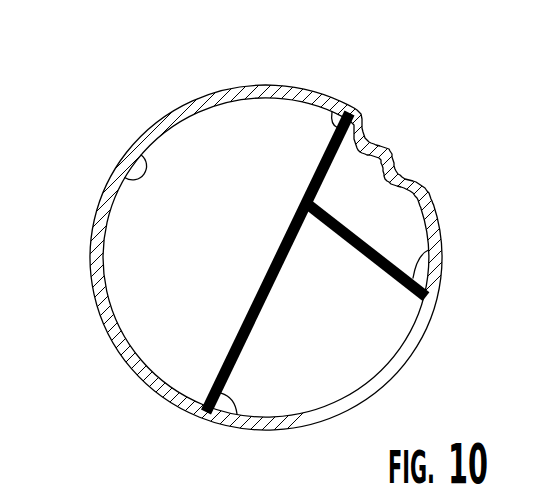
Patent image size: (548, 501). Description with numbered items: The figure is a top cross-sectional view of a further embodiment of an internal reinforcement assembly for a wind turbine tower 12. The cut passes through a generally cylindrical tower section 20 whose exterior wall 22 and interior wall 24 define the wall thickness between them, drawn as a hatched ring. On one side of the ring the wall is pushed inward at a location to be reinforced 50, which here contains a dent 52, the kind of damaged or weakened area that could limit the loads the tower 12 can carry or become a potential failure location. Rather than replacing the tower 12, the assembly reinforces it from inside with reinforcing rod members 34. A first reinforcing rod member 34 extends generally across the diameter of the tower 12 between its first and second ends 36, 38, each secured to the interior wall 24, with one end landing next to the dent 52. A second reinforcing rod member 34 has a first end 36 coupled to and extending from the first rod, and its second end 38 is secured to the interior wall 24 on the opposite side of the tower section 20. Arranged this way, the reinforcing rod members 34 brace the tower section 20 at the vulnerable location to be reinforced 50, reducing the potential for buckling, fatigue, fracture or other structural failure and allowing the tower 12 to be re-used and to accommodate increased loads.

The wind turbine tower 12 is at (468, 332).
The tower section 20 is at (80, 251).
The exterior wall 22 is at (187, 107).
The interior wall 24 is at (120, 177).
The reinforcing rod members 34 is at (232, 318).
The first end 36 is at (311, 220).
The second end 38 is at (331, 124).
The location to be reinforced 50 is at (393, 102).
The dent 52 is at (400, 168).